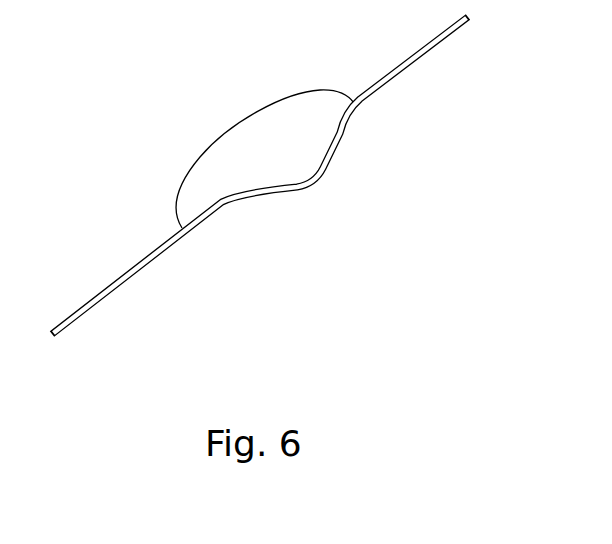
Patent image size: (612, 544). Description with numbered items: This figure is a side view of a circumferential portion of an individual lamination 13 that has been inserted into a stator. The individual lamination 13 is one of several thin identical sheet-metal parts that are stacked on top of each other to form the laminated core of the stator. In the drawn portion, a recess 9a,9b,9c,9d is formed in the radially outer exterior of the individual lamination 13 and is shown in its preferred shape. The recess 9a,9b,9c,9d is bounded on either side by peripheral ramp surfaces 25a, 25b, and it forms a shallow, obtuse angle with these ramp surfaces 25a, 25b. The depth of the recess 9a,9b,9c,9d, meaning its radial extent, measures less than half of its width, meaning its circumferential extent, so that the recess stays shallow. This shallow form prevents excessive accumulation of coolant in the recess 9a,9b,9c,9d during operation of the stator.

The individual lamination 13 is at (88, 311).
The peripheral ramp surface 25a is at (264, 198).
The peripheral ramp surface 25b is at (348, 125).
The recess 9a,9b,9c,9d is at (330, 160).